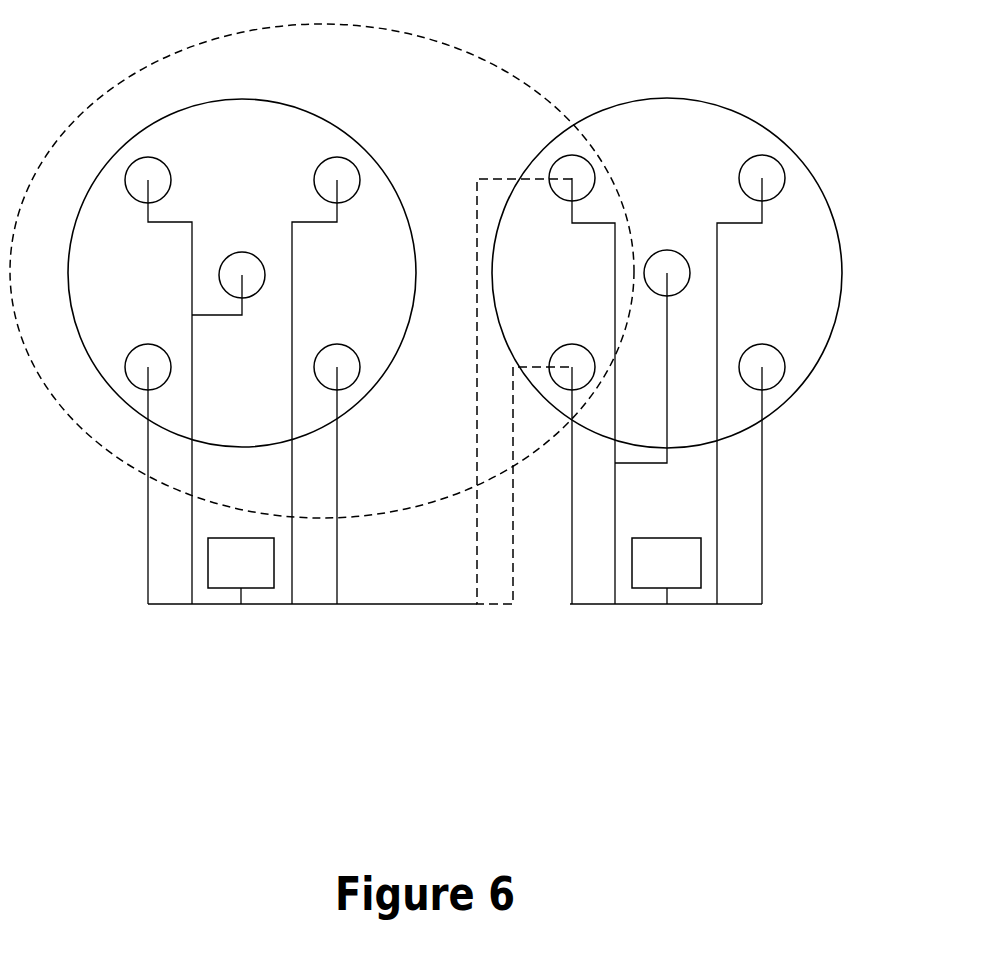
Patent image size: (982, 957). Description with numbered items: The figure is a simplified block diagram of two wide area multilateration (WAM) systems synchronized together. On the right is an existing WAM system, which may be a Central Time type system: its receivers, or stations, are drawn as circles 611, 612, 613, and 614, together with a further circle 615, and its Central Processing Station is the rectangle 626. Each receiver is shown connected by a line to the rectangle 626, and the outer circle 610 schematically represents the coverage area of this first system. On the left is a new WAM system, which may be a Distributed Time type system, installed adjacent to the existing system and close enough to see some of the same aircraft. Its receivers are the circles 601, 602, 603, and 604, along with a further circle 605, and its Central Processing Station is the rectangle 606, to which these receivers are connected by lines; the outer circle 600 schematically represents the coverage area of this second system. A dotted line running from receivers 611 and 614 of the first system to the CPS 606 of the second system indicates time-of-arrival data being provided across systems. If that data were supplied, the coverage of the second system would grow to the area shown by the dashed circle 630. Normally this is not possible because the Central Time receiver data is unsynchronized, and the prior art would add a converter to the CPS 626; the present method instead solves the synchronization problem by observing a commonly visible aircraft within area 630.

The outer circle (coverage area of second WAM system) 600 is at (242, 273).
The receiver (station) 601 is at (198, 163).
The receiver (station) 602 is at (318, 185).
The receiver (station) 603 is at (265, 263).
The receiver (station) 604 is at (165, 347).
The fifth sensor pad 605 is at (362, 322).
The Central Processing Station (CPS) 606 is at (312, 571).
The outer circle (coverage area of first WAM system) 610 is at (702, 102).
The receiver (station) 611 is at (653, 148).
The receiver (station) 612 is at (740, 187).
The receiver (station) 613 is at (697, 227).
The receiver (station) 614 is at (588, 353).
The fifth sensor pad of second array 615 is at (743, 347).
The Central Processing Station (CPS) 626 is at (666, 571).
The dashed circle (increased coverage area) 630 is at (532, 88).